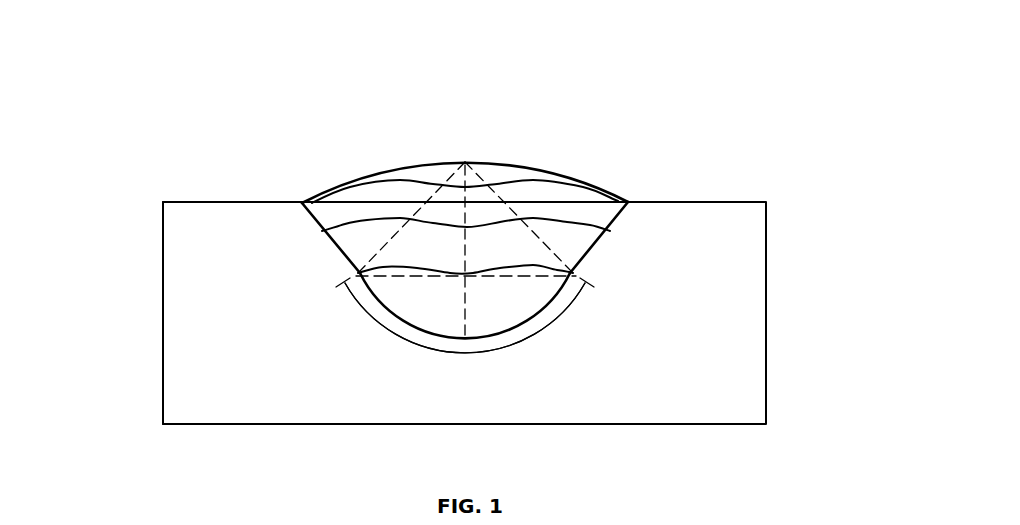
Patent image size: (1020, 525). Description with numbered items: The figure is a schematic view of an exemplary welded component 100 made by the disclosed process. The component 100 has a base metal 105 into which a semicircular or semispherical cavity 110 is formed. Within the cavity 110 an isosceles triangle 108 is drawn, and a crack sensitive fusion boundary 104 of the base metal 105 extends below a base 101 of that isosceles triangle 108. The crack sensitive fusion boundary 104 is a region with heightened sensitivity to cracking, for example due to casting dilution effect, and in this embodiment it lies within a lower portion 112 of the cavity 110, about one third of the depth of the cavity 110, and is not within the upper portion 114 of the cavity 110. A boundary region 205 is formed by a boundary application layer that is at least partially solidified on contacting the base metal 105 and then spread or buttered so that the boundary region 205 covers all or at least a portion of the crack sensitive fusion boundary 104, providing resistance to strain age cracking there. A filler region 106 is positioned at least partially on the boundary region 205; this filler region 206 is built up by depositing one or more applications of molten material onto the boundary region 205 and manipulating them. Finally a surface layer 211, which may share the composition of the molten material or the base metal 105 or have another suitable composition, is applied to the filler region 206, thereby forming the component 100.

The component 100 is at (822, 280).
The base of isosceles triangle 101 is at (357, 222).
The crack sensitive fusion boundary 104 is at (387, 327).
The base metal 105 is at (208, 321).
The filler region 106 is at (310, 232).
The isosceles triangle 108 is at (503, 190).
The cavity 110 is at (597, 260).
The lower portion of the cavity 112 is at (340, 308).
The upper portion of the cavity 114 is at (323, 256).
The boundary region 205 is at (498, 299).
The filler region 206 is at (417, 273).
The surface layer 211 is at (430, 162).